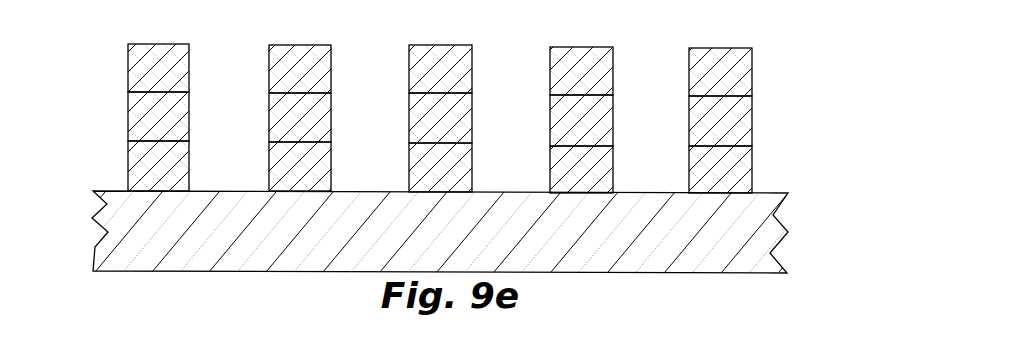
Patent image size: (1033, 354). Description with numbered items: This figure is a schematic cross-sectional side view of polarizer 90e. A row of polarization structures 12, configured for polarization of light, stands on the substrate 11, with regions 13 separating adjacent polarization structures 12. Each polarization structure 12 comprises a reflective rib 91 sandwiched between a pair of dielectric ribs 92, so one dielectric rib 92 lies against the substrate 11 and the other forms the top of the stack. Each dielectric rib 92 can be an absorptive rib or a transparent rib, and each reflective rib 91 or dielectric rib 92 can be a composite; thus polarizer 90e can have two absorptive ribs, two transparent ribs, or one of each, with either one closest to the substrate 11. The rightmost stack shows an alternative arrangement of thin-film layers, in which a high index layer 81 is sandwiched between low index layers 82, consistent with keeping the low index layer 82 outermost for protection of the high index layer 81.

The substrate 11 is at (442, 232).
The polarization structures 12 is at (497, 118).
The gap between structures 13 is at (437, 119).
The high index layer 81 is at (720, 121).
The low index layer 82 is at (720, 120).
The reflective rib 91 is at (370, 119).
The dielectric rib 92 is at (370, 118).
The polarizer 90e is at (441, 166).